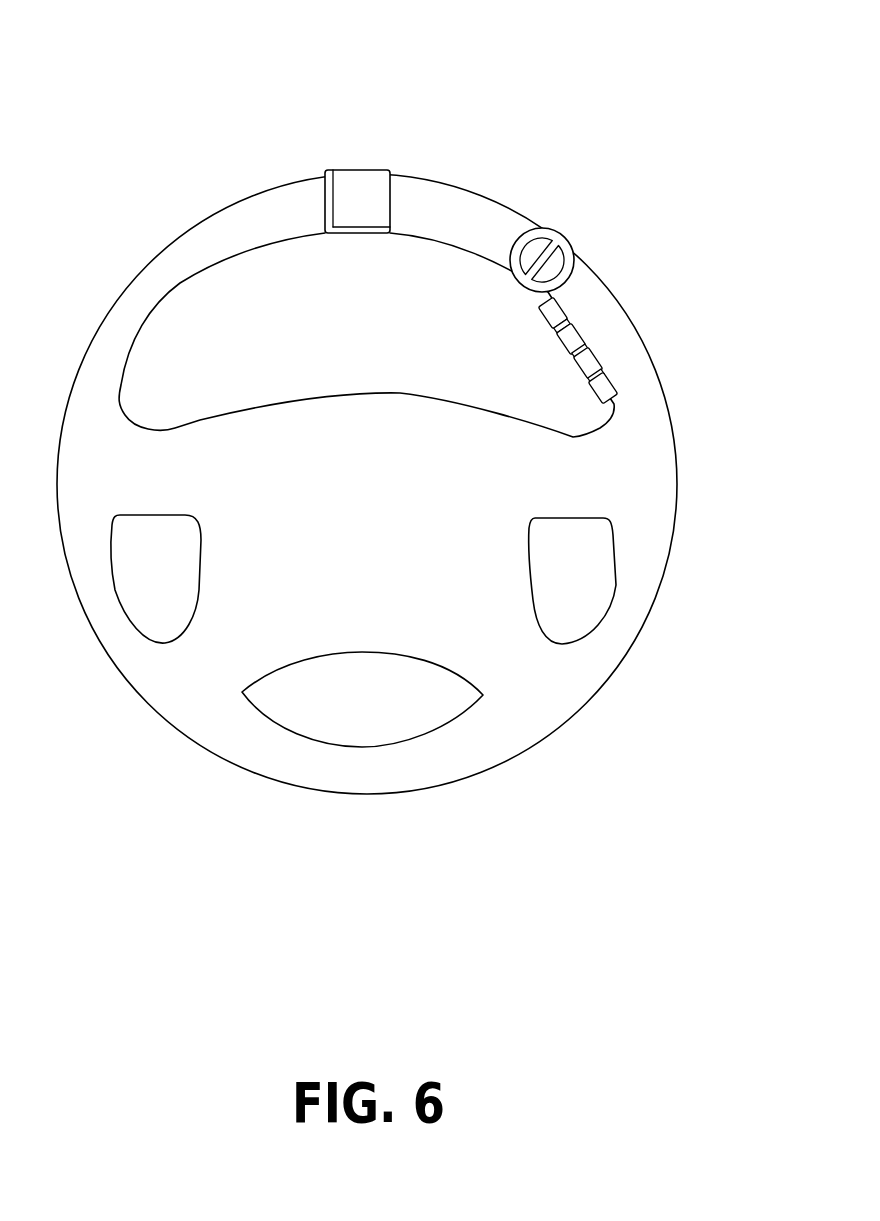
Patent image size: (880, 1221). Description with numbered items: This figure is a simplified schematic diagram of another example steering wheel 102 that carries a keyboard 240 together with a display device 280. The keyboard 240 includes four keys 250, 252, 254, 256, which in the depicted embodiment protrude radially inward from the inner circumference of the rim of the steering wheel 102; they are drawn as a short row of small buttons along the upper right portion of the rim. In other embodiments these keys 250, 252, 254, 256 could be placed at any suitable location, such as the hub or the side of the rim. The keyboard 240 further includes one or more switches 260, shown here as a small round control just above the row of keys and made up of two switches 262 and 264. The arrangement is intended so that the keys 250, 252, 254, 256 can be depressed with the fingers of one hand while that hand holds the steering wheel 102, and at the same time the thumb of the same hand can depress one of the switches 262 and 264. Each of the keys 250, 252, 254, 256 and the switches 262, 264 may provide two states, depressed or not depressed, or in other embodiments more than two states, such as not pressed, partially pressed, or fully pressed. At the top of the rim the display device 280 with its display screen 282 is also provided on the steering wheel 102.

The steering wheel 102 is at (254, 780).
The keyboard 240 is at (555, 245).
The key 250 is at (598, 383).
The key 252 is at (580, 363).
The key 254 is at (563, 343).
The key 256 is at (547, 320).
The switches 260 is at (560, 156).
The switch 262 is at (556, 245).
The switch 264 is at (542, 230).
The display device 280 is at (371, 124).
The display screen 282 is at (373, 187).